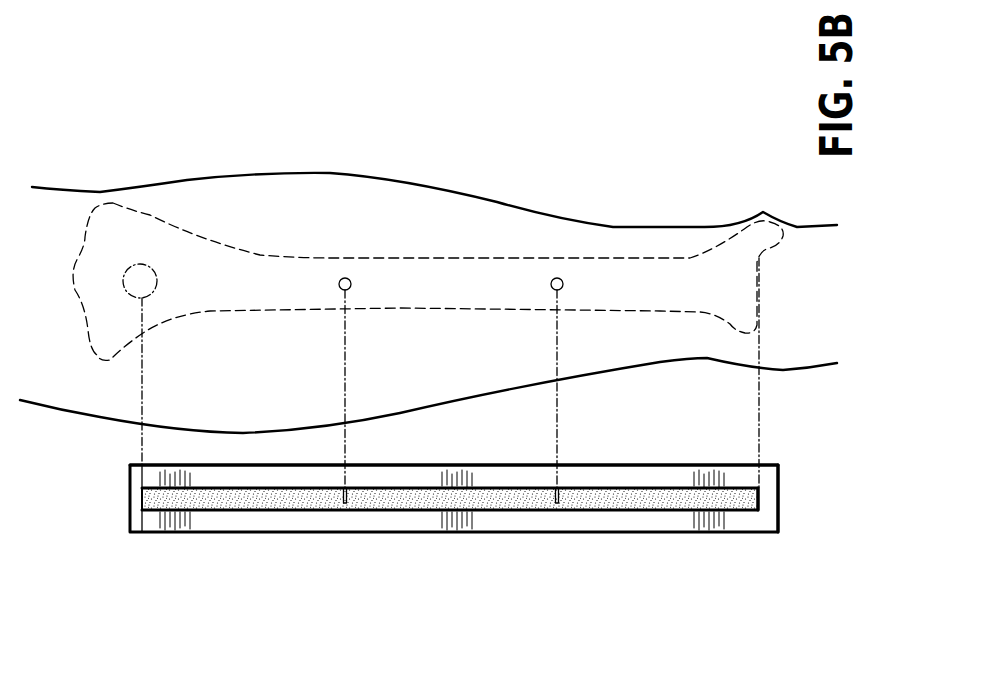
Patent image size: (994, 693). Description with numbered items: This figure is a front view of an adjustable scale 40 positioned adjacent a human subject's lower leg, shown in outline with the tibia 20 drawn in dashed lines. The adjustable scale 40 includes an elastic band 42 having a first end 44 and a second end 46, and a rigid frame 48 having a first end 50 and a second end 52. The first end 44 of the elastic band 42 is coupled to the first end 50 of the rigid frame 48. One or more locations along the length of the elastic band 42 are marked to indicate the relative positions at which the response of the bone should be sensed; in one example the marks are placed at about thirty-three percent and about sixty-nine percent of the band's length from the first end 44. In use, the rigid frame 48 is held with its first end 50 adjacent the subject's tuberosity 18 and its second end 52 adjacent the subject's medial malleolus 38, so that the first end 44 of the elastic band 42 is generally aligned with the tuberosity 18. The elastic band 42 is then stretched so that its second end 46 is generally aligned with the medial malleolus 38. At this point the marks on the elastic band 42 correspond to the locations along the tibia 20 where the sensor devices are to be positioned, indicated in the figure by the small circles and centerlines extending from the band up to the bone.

The bone 18 is at (125, 272).
The bone pins 20 is at (345, 258).
The distal end of bone 38 is at (757, 233).
The pin guide assembly 40 is at (106, 536).
The pin-receiving compressible layer 42 is at (273, 511).
The first end of layer 44 is at (145, 503).
The second end of layer 46 is at (757, 510).
The housing base 48 is at (385, 533).
The housing top wall 50 is at (130, 488).
The housing end wall 52 is at (780, 500).